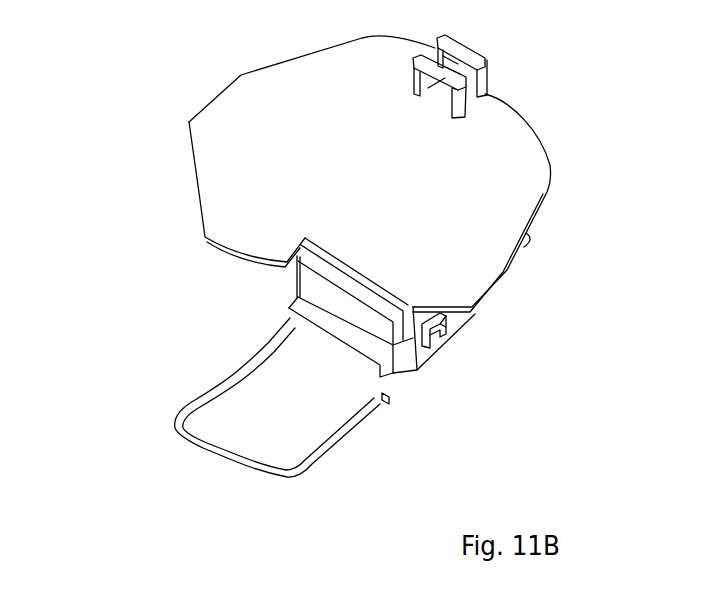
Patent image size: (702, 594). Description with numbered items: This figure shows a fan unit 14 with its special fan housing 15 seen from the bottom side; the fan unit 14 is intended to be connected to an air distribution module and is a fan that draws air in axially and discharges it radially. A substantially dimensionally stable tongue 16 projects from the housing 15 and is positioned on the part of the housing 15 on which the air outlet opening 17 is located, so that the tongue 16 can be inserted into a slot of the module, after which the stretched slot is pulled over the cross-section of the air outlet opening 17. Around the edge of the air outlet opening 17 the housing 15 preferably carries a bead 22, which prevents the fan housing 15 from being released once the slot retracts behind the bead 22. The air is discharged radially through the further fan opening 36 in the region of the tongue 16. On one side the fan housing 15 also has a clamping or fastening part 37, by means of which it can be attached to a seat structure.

The fan unit 14 is at (126, 130).
The fan housing 15 is at (453, 320).
The dimensionally stable tongue 16 is at (220, 418).
The air outlet opening 17 is at (352, 358).
The bead 22 is at (396, 378).
The further fan opening 36 is at (330, 347).
The clamping or fastening part 37 is at (489, 94).